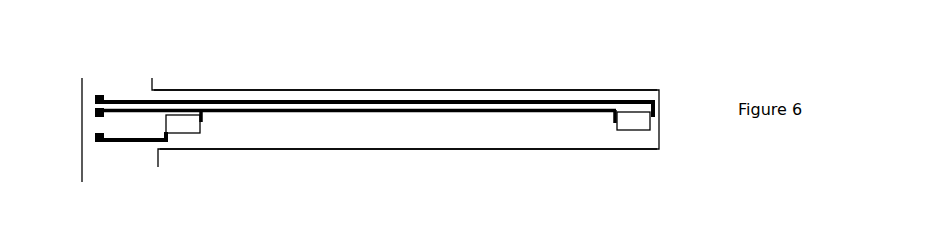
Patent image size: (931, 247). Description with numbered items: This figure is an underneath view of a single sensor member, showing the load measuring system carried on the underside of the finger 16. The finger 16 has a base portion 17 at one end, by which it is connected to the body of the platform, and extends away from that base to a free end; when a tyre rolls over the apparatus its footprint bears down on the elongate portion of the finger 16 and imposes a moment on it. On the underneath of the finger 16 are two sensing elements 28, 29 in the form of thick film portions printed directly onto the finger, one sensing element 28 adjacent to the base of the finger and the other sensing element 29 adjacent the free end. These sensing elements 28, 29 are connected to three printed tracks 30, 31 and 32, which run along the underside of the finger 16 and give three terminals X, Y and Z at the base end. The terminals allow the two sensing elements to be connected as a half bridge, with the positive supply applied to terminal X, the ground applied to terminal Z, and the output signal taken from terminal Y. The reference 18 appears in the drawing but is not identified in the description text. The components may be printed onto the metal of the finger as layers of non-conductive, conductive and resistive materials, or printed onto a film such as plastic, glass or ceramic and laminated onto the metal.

The finger 16 is at (387, 142).
The base portion 17 is at (110, 124).
The housing frame 18 is at (662, 128).
The sensing element 28 is at (186, 125).
The sensing element 29 is at (632, 123).
The track 30 is at (163, 98).
The track 31 is at (144, 103).
The track 32 is at (128, 142).
The terminal X is at (99, 95).
The terminal Y is at (99, 113).
The terminal Z is at (97, 137).